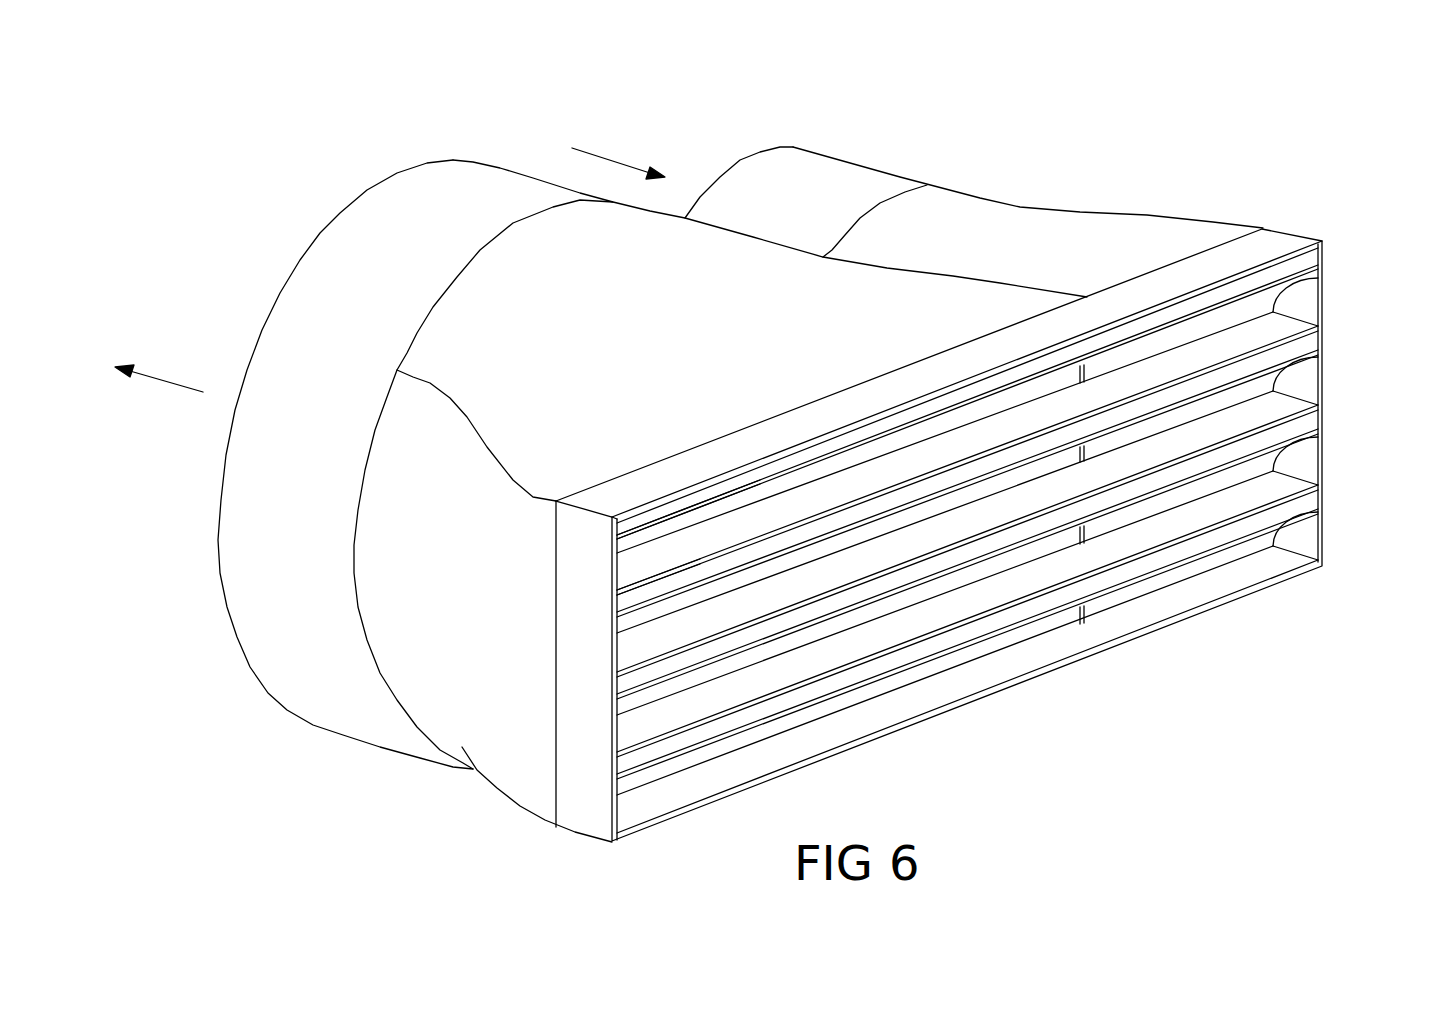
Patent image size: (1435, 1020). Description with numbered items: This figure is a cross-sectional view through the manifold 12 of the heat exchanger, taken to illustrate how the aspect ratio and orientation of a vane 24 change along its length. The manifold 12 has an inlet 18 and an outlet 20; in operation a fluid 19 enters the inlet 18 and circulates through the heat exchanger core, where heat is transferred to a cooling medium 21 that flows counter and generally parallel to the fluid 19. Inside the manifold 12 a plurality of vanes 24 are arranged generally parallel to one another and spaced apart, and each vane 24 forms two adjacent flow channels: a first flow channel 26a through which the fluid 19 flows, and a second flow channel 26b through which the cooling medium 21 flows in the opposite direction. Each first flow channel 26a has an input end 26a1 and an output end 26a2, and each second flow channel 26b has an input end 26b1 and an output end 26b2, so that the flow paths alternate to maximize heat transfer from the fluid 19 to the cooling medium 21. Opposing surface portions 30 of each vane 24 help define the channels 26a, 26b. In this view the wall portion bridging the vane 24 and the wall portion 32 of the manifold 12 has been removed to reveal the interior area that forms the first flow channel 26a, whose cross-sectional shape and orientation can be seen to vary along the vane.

The manifold 12 is at (1058, 180).
The inlet 18 is at (768, 163).
The fluid 19 is at (608, 157).
The outlet 20 is at (353, 250).
The cooling medium 21 is at (175, 383).
The vane 24 is at (1293, 283).
The first flow channel 26a is at (1302, 262).
The input end 26a1 is at (1238, 288).
The output end 26a2 is at (725, 483).
The second flow channel 26b is at (1227, 350).
The input end 26b1 is at (643, 563).
The output end 26b2 is at (1270, 327).
The grille front left edge 30 is at (612, 520).
The wall portion 32 is at (1320, 243).